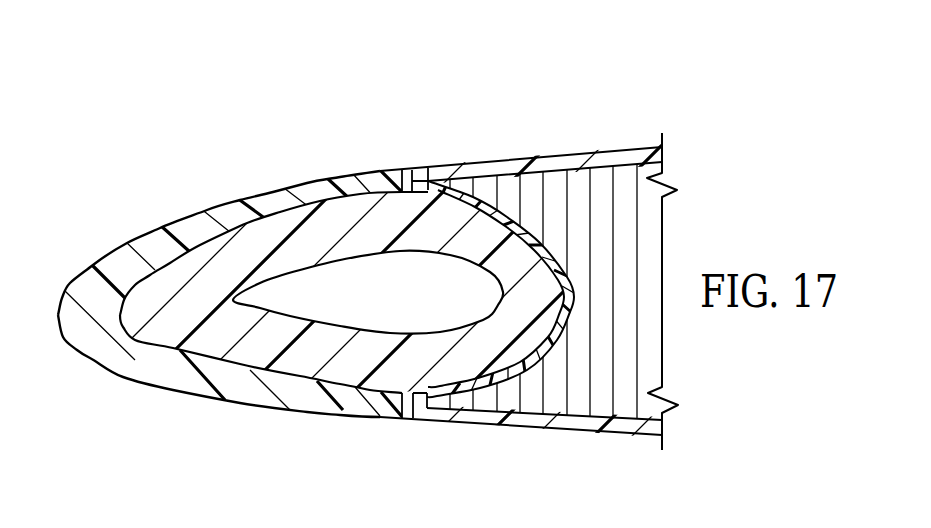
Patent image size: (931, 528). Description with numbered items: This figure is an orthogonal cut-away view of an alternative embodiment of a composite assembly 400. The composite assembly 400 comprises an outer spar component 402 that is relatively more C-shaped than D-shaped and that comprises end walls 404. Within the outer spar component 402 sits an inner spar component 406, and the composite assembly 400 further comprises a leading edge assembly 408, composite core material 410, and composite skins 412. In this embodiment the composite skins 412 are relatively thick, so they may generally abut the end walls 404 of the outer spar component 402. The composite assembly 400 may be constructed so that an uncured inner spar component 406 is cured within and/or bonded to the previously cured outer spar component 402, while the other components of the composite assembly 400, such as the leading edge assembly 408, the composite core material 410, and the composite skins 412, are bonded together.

The composite assembly 400 is at (250, 89).
The outer spar component 402 is at (487, 190).
The end walls 404 is at (440, 163).
The inner spar component 406 is at (413, 247).
The leading edge assembly 408 is at (227, 213).
The composite core material 410 is at (533, 400).
The composite skins 412 is at (630, 158).